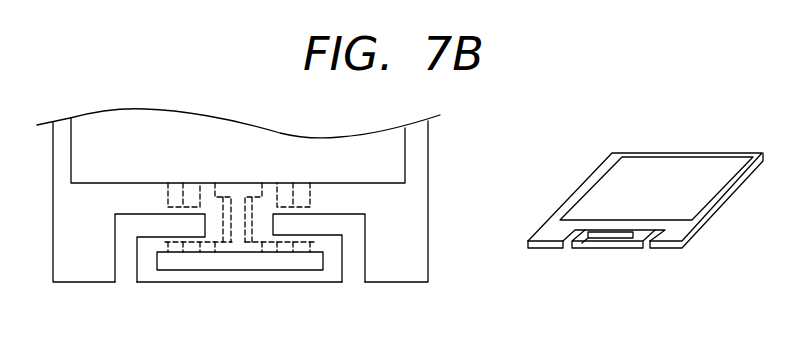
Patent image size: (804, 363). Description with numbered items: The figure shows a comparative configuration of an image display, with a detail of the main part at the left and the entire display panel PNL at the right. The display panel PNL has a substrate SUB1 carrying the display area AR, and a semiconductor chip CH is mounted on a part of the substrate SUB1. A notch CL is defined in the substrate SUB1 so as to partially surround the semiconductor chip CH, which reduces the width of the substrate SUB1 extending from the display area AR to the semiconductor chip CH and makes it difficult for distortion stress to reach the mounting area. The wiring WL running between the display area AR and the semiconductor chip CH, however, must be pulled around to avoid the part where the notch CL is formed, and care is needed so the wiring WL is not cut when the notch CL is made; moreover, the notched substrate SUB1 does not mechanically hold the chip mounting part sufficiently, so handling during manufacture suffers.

The substrate SUB1 is at (428, 133).
The display area AR is at (412, 169).
The wiring WL is at (222, 223).
The semiconductor chip CH is at (243, 267).
The notch CL is at (353, 273).
The display panel PNL is at (675, 148).